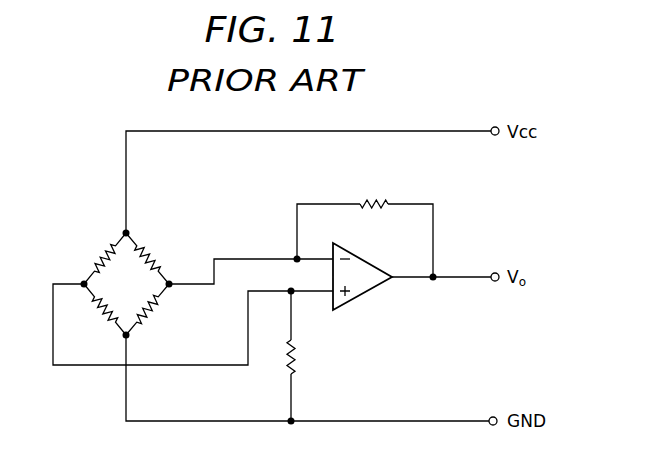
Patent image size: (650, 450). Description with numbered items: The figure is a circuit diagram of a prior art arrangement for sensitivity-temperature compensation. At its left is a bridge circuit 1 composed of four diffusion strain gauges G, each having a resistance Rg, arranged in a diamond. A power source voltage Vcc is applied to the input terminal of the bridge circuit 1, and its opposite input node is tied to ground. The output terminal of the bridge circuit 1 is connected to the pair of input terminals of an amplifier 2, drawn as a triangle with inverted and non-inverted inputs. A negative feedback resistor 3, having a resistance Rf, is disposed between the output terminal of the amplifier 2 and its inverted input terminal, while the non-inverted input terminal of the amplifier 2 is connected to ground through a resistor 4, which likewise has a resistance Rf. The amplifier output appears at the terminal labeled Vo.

The bridge circuit 1 is at (87, 261).
The diffusion strain gauge G is at (153, 250).
The amplifier 2 is at (370, 292).
The negative feedback resistor 3 is at (377, 198).
The resistor 4 is at (296, 356).